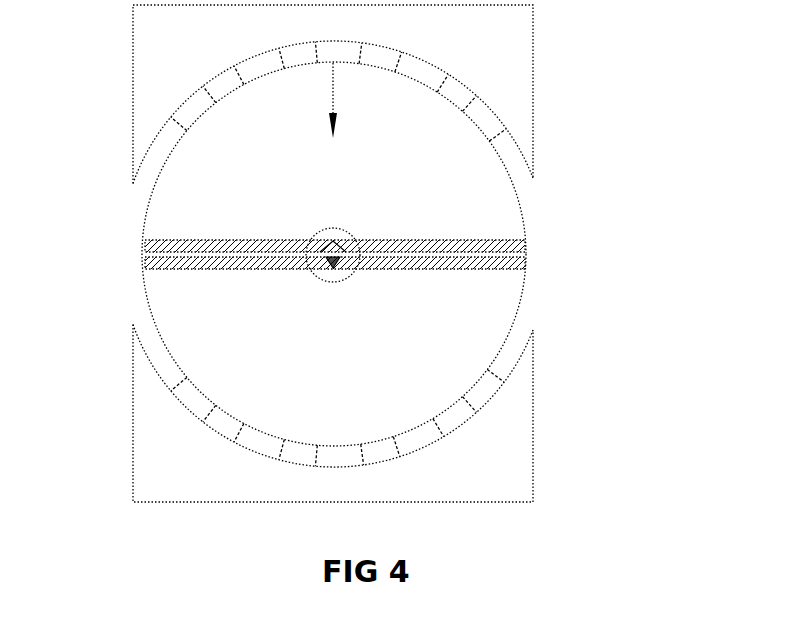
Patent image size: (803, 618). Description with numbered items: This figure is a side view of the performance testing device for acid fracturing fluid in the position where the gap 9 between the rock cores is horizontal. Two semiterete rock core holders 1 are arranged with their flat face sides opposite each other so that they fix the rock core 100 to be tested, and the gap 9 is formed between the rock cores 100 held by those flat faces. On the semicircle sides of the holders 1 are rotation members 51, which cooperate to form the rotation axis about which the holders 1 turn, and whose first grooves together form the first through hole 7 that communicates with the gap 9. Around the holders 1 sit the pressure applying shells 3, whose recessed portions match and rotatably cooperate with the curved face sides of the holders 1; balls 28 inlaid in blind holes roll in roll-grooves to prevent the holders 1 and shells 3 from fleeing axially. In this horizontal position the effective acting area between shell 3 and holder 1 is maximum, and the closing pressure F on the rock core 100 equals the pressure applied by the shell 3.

The semiterete rock core holder 1 is at (136, 306).
The pressure applying shell 3 is at (546, 411).
The first through hole 7 is at (353, 283).
The gap 9 is at (272, 250).
The balls 28 is at (195, 107).
The rotation member 51 is at (348, 238).
The rock core 100 is at (224, 287).
The closing pressure F is at (338, 109).